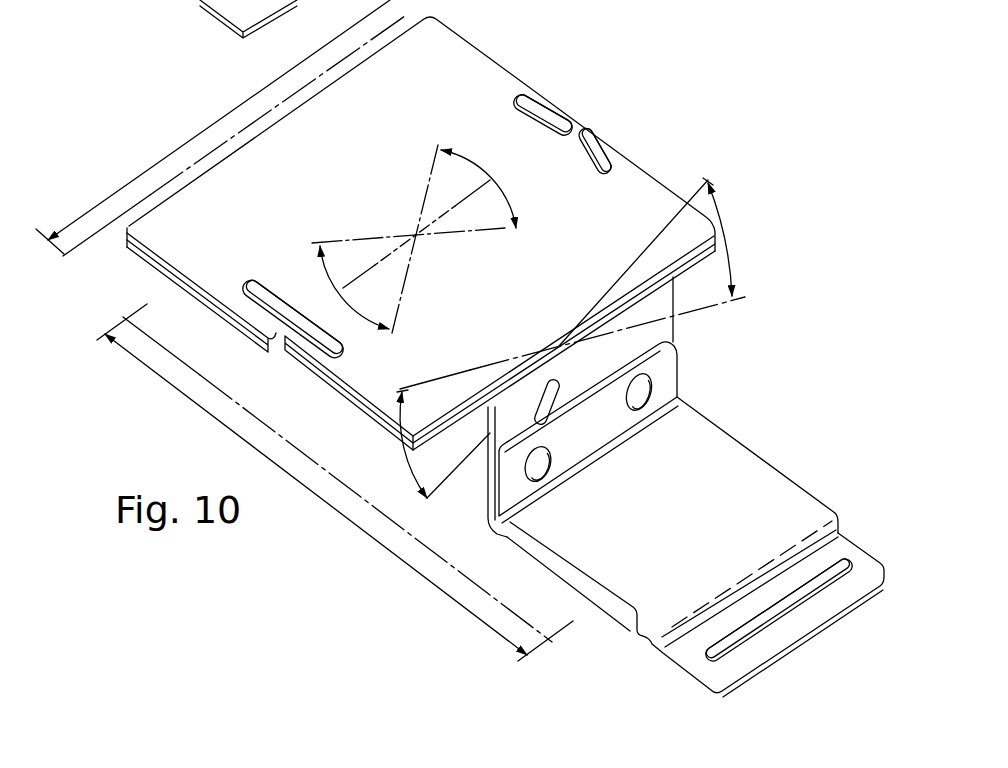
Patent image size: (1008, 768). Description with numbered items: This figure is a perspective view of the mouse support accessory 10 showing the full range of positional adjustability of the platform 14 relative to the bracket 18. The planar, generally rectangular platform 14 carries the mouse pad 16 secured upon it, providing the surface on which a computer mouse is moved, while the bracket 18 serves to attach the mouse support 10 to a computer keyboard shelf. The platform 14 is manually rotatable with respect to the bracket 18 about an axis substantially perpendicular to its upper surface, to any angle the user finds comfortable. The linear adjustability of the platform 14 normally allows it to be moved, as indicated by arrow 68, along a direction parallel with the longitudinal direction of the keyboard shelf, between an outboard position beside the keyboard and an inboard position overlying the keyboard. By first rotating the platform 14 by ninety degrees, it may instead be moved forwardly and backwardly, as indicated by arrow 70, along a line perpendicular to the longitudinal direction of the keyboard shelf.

The mouse support accessory 10 is at (406, 594).
The platform 14 is at (733, 251).
The mouse pad 16 is at (640, 177).
The bracket 18 is at (673, 382).
The arrow 68 is at (323, 500).
The arrow 70 is at (208, 130).